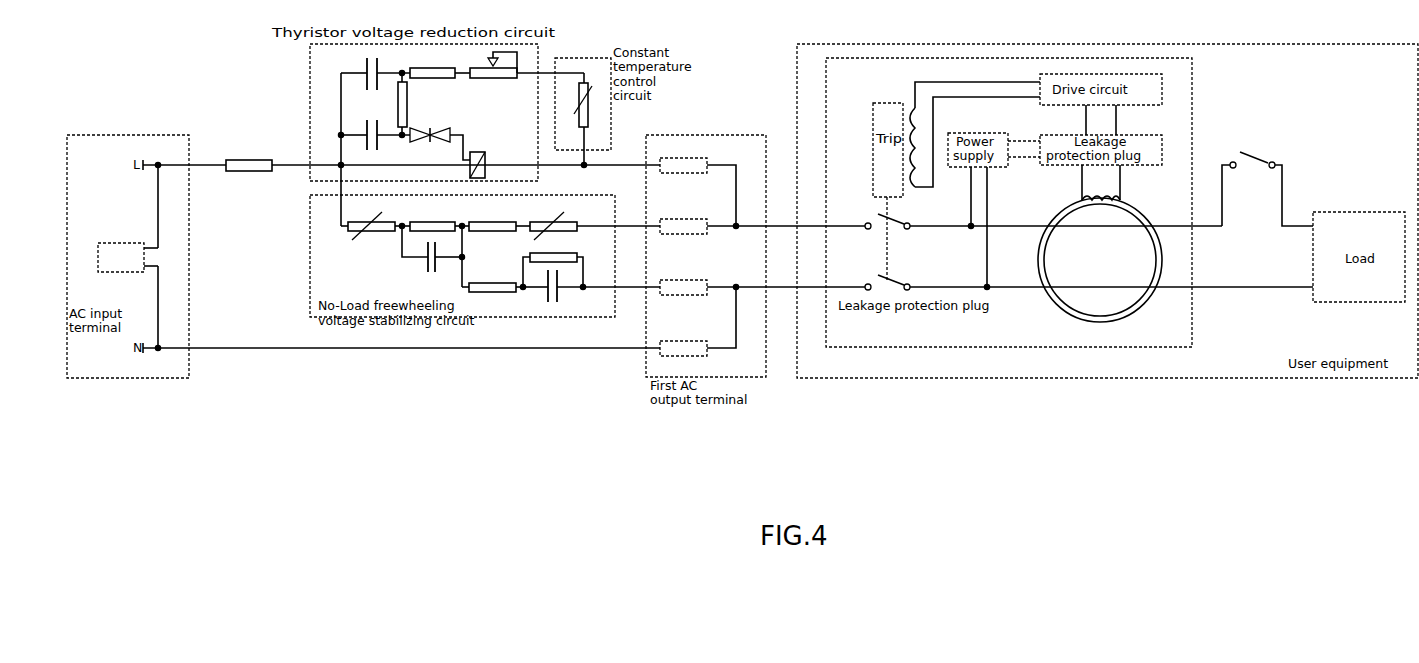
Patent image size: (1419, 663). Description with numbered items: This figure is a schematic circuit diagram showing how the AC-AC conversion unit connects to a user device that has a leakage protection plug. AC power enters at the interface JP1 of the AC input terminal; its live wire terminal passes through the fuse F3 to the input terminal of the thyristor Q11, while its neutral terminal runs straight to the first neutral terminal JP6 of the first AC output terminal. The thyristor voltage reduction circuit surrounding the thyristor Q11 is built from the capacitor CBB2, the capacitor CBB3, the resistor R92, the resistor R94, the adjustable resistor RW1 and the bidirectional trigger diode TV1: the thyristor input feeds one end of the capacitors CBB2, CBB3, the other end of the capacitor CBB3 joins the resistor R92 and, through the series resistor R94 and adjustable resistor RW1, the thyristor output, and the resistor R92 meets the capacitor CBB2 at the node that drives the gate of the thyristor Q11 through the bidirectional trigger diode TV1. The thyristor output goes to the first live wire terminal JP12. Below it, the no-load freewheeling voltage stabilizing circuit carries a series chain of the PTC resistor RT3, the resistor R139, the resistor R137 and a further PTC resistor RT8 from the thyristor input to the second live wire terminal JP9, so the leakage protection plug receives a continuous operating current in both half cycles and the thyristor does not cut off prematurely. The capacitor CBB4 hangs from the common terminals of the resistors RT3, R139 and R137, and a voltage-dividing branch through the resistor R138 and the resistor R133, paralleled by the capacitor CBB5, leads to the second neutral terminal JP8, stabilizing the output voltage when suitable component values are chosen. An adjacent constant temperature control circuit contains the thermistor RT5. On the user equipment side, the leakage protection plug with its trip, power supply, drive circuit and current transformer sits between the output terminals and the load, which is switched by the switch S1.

The interface of the AC input terminal JP1 is at (120, 250).
The fuse F3 is at (245, 156).
The capacitor CBB3 is at (365, 68).
The resistor R94 is at (432, 67).
The adjustable resistor RW1 is at (493, 72).
The resistor R92 is at (414, 104).
The capacitor CBB2 is at (369, 129).
The bidirectional trigger diode TV1 is at (437, 131).
The thyristor Q11 is at (489, 163).
The thermistor RT5 is at (590, 105).
The resistor RT3 is at (371, 224).
The resistor R139 is at (432, 219).
The resistor R137 is at (492, 219).
The thermistor RT8 is at (552, 224).
The capacitor CBB4 is at (427, 263).
The resistor R138 is at (492, 294).
The resistor R133 is at (553, 251).
The capacitor CBB5 is at (567, 286).
The first live wire terminal JP12 is at (683, 159).
The second live wire terminal JP9 is at (683, 220).
The second neutral terminal JP8 is at (683, 281).
The first neutral terminal JP6 is at (683, 342).
The switch S1 is at (1252, 151).